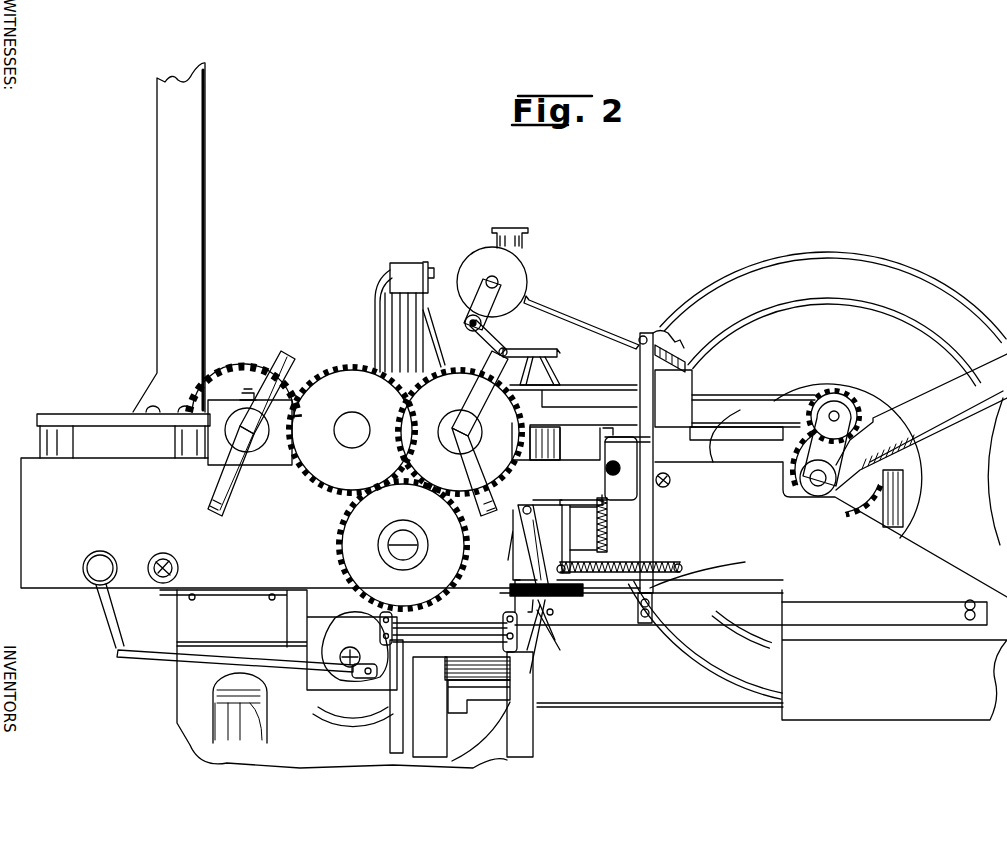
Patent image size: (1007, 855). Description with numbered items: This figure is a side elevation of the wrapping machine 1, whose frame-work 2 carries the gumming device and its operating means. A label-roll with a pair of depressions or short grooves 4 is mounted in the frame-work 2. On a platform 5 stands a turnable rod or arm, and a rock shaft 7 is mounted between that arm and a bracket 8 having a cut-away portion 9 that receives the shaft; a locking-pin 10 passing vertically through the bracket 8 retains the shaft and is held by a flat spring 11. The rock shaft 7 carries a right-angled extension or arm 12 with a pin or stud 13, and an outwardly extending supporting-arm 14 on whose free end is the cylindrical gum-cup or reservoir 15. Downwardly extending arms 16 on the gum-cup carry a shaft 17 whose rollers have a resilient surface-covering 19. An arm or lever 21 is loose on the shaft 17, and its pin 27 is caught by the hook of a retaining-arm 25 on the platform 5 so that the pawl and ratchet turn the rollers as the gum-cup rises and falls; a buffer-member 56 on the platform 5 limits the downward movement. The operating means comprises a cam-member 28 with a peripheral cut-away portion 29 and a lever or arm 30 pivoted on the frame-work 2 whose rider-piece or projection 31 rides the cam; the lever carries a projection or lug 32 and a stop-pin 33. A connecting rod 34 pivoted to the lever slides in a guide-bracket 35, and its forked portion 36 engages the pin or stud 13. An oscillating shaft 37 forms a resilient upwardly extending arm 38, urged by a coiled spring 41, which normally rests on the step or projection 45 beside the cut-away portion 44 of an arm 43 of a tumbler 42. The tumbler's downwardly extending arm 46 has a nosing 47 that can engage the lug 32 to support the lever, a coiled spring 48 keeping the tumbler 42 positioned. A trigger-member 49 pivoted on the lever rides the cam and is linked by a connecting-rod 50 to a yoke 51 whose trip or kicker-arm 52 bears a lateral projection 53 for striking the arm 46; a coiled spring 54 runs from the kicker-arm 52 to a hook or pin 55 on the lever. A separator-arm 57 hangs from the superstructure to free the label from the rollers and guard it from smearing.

The wrapping machine 1 is at (292, 284).
The frame-work 2 is at (772, 584).
The depressions or short grooves 4 is at (899, 440).
The platform 5 is at (573, 395).
The rock shaft 7 is at (720, 344).
The bracket 8 is at (698, 386).
The cut-away portion 9 is at (673, 398).
The locking-pin 10 is at (690, 366).
The flat spring 11 is at (700, 440).
The right-angled extension or arm 12 is at (680, 340).
The pin or stud 13 is at (640, 336).
The supporting-arm 14 is at (592, 320).
The gum-cup or reservoir 15 is at (522, 252).
The downwardly extending arms 16 is at (515, 282).
The shaft 17 is at (471, 332).
The surface-covering 19 is at (464, 325).
The arm or lever 21 is at (492, 332).
The retaining-arm 25 is at (460, 433).
The pin 27 is at (527, 348).
The cam-member 28 is at (340, 678).
The cut-away portion 29 is at (340, 644).
The lever or arm 30 is at (850, 612).
The rider-piece or projection 31 is at (347, 617).
The projection or lug 32 is at (540, 640).
The stop-pin 33 is at (560, 618).
The connecting rod 34 is at (652, 520).
The guide-bracket 35 is at (692, 492).
The forked portion 36 is at (645, 336).
The oscillating shaft 37 is at (703, 568).
The upwardly extending arm 38 is at (582, 528).
The coiled spring 41 is at (668, 562).
The tumbler 42 is at (522, 504).
The arm 43 is at (600, 498).
The cut-away portion 44 is at (566, 500).
The step or projection 45 is at (540, 500).
The downwardly extending arm 46 is at (530, 536).
The nosing 47 is at (606, 685).
The coiled spring 48 is at (616, 525).
The trigger-member 49 is at (428, 676).
The connecting-rod 50 is at (452, 638).
The yoke 51 is at (538, 655).
The trip or kicker-arm 52 is at (507, 577).
The lateral projection 53 is at (512, 568).
The coiled spring 54 is at (567, 600).
The hook or pin 55 is at (595, 620).
The buffer-member 56 is at (545, 362).
The separator-arm 57 is at (420, 300).